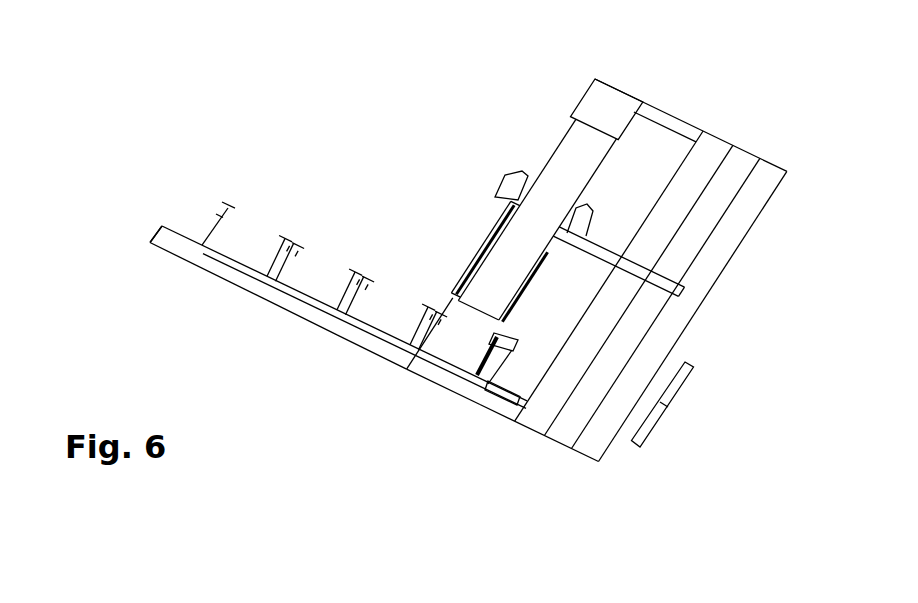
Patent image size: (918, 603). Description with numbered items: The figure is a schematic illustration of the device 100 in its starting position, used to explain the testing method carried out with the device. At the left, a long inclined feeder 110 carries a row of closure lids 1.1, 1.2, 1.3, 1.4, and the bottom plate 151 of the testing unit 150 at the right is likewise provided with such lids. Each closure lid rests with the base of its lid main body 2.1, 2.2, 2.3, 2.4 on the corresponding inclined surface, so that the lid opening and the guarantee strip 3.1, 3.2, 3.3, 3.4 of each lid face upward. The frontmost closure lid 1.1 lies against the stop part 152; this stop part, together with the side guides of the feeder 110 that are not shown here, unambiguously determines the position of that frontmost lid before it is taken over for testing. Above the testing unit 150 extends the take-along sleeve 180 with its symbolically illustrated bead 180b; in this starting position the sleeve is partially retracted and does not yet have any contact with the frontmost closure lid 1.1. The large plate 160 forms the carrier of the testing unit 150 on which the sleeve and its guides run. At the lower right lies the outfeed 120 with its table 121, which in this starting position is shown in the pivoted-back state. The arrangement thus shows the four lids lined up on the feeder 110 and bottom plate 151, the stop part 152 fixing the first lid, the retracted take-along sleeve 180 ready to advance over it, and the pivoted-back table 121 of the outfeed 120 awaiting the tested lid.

The device 100 is at (310, 76).
The feeder 110 is at (261, 381).
The outfeed 120 is at (690, 445).
The table 121 is at (668, 405).
The testing unit 150 is at (640, 60).
The bottom plate 151 is at (327, 333).
The stop part 152 is at (490, 390).
The plate 160 is at (735, 243).
The take-along sleeve 180 is at (540, 272).
The bead 180b is at (453, 280).
The frontmost closure lid 1.1 is at (458, 368).
The closure lid 1.2 is at (383, 338).
The closure lid 1.3 is at (302, 284).
The closure lid 1.4 is at (228, 255).
The lid main body 2.1 is at (470, 372).
The lid main body 2.2 is at (413, 318).
The lid main body 2.3 is at (345, 290).
The lid main body 2.4 is at (206, 232).
The guarantee strip 3.1 is at (505, 350).
The guarantee strip 3.2 is at (436, 306).
The guarantee strip 3.3 is at (361, 268).
The guarantee strip 3.4 is at (222, 203).